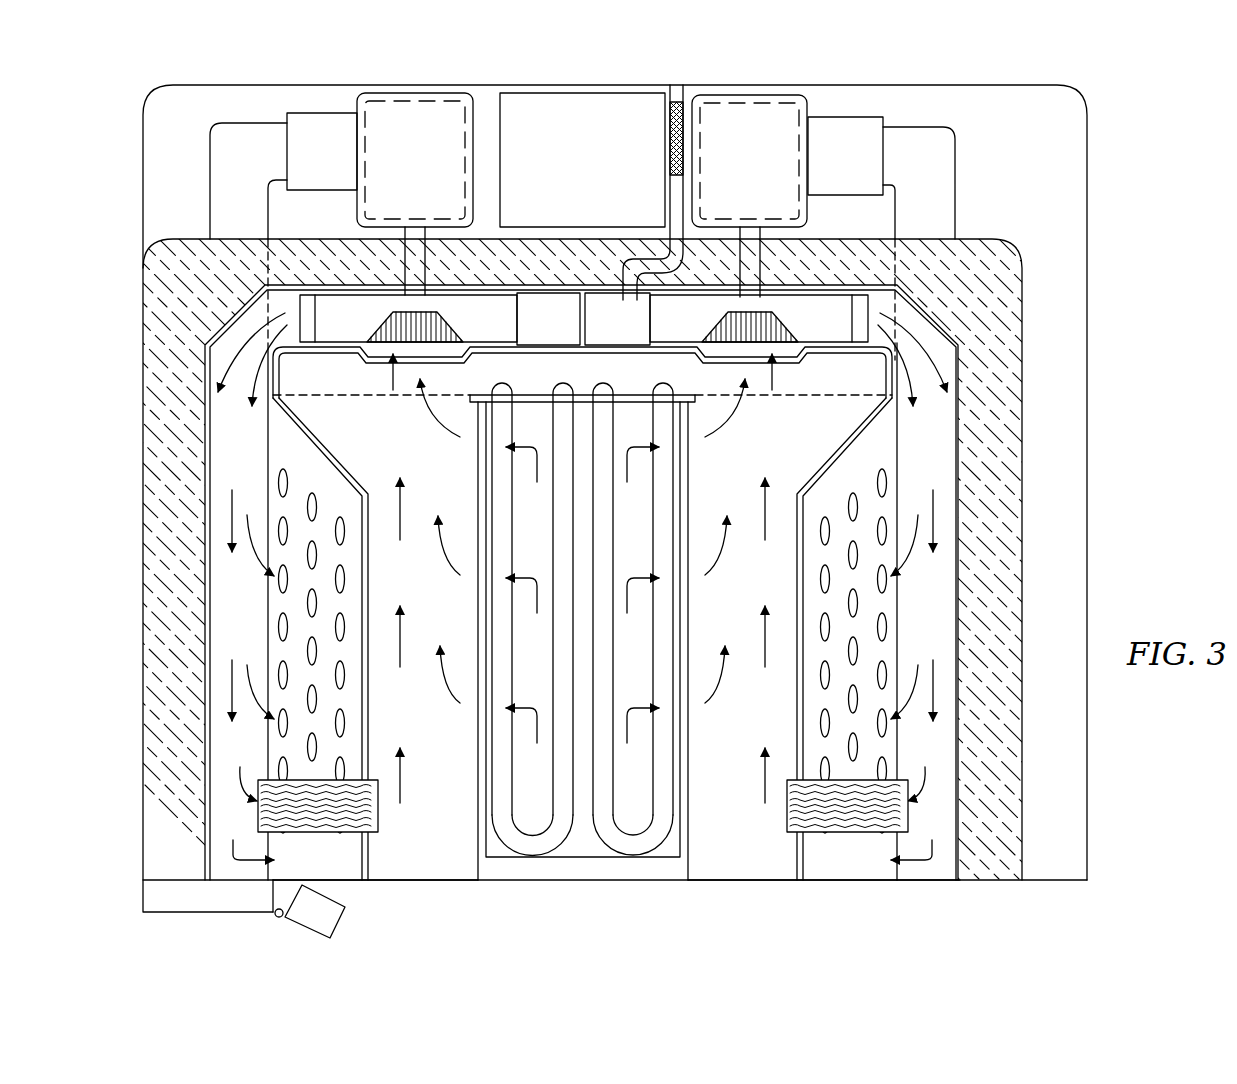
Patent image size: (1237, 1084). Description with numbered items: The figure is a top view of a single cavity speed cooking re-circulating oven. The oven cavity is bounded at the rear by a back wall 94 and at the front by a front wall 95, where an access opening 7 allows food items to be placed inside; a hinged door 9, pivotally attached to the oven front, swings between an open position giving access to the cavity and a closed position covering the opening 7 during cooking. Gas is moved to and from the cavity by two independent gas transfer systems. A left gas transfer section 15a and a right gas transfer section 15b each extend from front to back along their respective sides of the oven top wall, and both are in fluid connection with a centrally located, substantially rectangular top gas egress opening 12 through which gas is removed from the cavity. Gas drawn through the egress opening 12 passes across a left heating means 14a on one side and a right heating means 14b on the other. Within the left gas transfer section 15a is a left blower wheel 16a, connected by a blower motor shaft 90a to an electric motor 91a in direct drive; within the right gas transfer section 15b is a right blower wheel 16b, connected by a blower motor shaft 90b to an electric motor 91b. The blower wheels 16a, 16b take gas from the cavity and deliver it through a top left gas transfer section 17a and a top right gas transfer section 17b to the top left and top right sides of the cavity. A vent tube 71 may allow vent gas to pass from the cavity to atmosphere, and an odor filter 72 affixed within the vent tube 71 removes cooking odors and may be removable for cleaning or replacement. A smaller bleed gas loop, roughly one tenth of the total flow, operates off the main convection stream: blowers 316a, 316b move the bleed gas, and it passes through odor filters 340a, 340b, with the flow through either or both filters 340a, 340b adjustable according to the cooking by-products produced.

The access opening 7 is at (786, 894).
The hinged door 9 is at (345, 915).
The top gas egress opening 12 is at (580, 846).
The left heating means 14a is at (498, 737).
The right heating means 14b is at (665, 738).
The left gas transfer section 15a is at (435, 881).
The right gas transfer section 15b is at (745, 881).
The left blower wheel 16a is at (415, 330).
The right blower wheel 16b is at (765, 330).
The top left gas transfer section 17a is at (258, 452).
The top right gas transfer section 17b is at (950, 457).
The vent tube 71 is at (671, 205).
The odor filter 72 is at (669, 131).
The blower motor shaft 90a is at (420, 262).
The blower motor shaft 90b is at (760, 258).
The electric motor 91a is at (436, 142).
The electric motor 91b is at (771, 142).
The back wall 94 is at (520, 284).
The front wall 95 is at (870, 882).
The blower 316a is at (493, 318).
The blower 316b is at (676, 318).
The odor filter 340a is at (378, 812).
The odor filter 340b is at (787, 818).